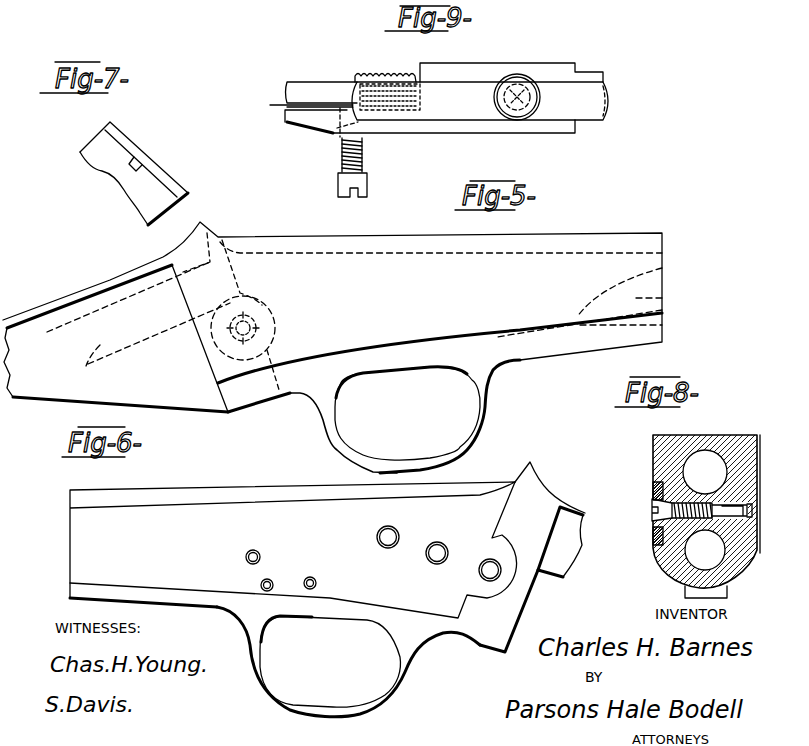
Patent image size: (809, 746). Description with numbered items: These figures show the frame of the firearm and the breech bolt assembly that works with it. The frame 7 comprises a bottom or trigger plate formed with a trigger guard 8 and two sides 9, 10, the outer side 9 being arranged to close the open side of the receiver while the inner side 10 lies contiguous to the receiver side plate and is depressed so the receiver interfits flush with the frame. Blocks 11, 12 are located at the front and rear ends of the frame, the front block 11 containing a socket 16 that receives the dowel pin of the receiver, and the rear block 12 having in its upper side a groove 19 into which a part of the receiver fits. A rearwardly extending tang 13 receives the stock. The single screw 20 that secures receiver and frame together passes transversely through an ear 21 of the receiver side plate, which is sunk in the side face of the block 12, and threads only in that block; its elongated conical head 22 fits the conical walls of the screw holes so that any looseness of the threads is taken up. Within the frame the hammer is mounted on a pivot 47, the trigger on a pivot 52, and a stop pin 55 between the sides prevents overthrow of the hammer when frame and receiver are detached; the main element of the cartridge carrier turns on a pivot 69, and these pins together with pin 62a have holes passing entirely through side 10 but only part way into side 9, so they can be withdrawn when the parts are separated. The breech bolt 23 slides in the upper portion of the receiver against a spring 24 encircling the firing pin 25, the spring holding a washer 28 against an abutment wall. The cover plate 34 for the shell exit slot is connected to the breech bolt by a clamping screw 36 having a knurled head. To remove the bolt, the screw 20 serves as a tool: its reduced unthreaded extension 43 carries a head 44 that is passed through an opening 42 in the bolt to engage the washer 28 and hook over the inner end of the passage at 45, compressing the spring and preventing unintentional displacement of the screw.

In FIG. 7, the frame 7 is at (105, 168).
In FIG. 5, the frame 7 is at (293, 353).
In FIG. 8, the frame 7 is at (664, 558).
In FIG. 6, the frame 7 is at (190, 582).
In FIG. 5, the trigger guard 8 is at (477, 417).
In FIG. 6, the trigger guard 8 is at (335, 716).
In FIG. 5, the side of frame 9 is at (427, 284).
In FIG. 6, the side of frame 10 is at (192, 533).
In FIG. 5, the block 11 is at (668, 285).
In FIG. 5, the block 12 is at (213, 354).
In FIG. 8, the block 12 is at (653, 450).
In FIG. 6, the block 12 is at (512, 602).
In FIG. 5, the tang 13 is at (63, 367).
In FIG. 8, the tang 13 is at (656, 541).
In FIG. 6, the tang 13 is at (570, 528).
In FIG. 5, the socket 16 is at (665, 307).
In FIG. 7, the groove 19 is at (140, 167).
In FIG. 5, the groove 19 is at (207, 223).
In FIG. 9, the screw 20 is at (338, 187).
In FIG. 8, the screw 20 is at (660, 505).
In FIG. 8, the ear 21 is at (656, 528).
In FIG. 9, the conical head 22 is at (367, 187).
In FIG. 8, the conical head 22 is at (657, 492).
In FIG. 9, the breech bolt 23 is at (440, 130).
In FIG. 9, the spring 24 is at (397, 80).
In FIG. 9, the firing pin 25 is at (318, 82).
In FIG. 9, the washer 28 is at (357, 76).
In FIG. 9, the cover plate 34 is at (583, 108).
In FIG. 9, the screw 36 is at (520, 112).
In FIG. 9, the opening 42 is at (342, 142).
In FIG. 9, the reduced unthreaded extension 43 is at (330, 126).
In FIG. 8, the reduced unthreaded extension 43 is at (731, 517).
In FIG. 9, the head 44 is at (302, 104).
In FIG. 8, the head 44 is at (749, 512).
In FIG. 9, the hooking surface 45 is at (333, 109).
In FIG. 6, the hammer pivot 47 is at (383, 544).
In FIG. 6, the trigger pivot 52 is at (310, 589).
In FIG. 6, the stop pin 55 is at (434, 558).
In FIG. 6, the pin 62a is at (252, 551).
In FIG. 6, the carrier pivot 69 is at (269, 580).